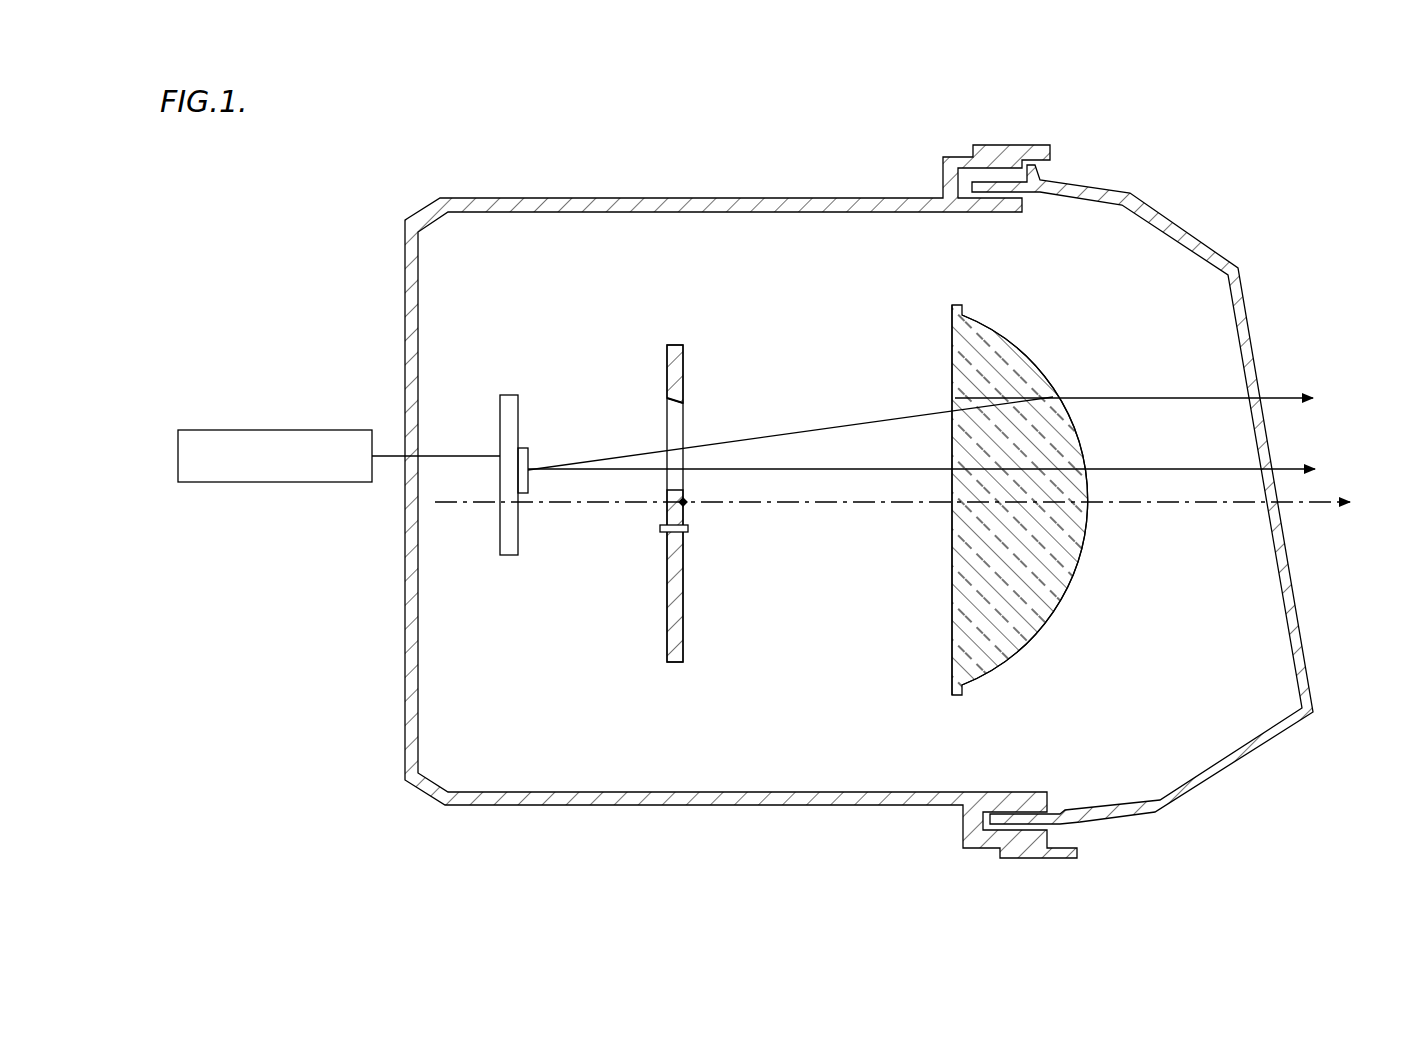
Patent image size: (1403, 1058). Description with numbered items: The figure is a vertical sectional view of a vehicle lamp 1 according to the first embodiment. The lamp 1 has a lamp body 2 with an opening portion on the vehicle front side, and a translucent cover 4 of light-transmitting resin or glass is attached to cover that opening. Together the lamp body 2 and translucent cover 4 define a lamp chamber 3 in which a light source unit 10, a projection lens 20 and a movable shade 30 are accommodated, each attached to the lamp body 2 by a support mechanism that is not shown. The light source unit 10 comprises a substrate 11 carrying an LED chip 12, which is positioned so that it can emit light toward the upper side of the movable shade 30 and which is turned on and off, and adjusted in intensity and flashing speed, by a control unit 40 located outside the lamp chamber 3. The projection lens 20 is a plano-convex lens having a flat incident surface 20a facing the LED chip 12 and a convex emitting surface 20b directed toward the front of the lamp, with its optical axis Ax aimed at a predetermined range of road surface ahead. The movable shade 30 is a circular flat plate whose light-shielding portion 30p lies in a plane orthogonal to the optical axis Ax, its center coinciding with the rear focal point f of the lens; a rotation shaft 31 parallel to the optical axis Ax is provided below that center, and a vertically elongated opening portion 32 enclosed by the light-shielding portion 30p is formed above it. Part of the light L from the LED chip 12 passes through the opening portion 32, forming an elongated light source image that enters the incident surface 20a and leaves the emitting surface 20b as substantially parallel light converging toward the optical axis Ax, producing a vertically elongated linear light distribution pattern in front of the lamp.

The lamp 1 is at (726, 883).
The lamp body 2 is at (497, 806).
The lamp chamber 3 is at (1232, 698).
The translucent cover 4 is at (1212, 785).
The light source unit 10 is at (529, 468).
The substrate 11 is at (510, 556).
The LED chip 12 is at (529, 446).
The projection lens 20 is at (999, 472).
The incident surface 20a is at (952, 590).
The emitting surface 20b is at (1052, 620).
The movable shade 30 is at (671, 470).
The light-shielding portion 30p is at (667, 622).
The rotation shaft 31 is at (688, 530).
The opening portion 32 is at (677, 406).
The control unit 40 is at (286, 430).
The light L is at (888, 412).
The rear focal point f is at (684, 502).
The optical axis Ax is at (909, 502).